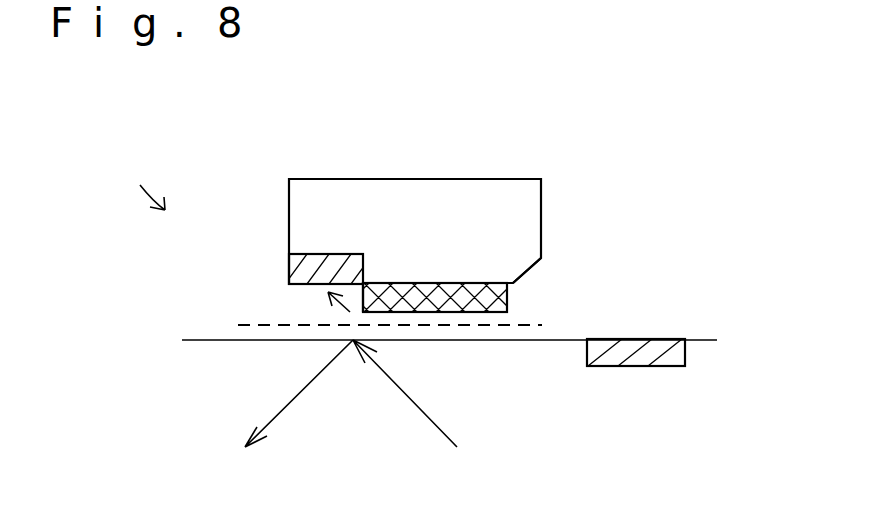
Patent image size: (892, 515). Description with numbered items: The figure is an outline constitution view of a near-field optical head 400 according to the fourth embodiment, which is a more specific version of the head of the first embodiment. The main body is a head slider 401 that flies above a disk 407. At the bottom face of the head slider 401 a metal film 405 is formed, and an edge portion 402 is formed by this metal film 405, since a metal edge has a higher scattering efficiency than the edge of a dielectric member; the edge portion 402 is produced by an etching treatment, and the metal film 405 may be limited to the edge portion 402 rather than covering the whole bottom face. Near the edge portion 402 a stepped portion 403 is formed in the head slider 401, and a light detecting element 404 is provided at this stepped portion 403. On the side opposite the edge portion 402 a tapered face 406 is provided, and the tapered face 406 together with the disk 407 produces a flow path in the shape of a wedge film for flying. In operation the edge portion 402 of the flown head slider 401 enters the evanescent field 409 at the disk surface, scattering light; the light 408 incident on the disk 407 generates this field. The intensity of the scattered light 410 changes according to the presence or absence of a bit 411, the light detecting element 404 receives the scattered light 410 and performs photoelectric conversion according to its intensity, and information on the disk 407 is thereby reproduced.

The near-field optical head 400 is at (173, 177).
The head slider 401 is at (530, 200).
The edge portion 402 is at (385, 284).
The stepped portion 403 is at (300, 265).
The light detecting element 404 is at (290, 252).
The metal film 405 is at (457, 305).
The tapered face 406 is at (518, 280).
The disk 407 is at (702, 357).
The light beam path 408 is at (438, 425).
The evanescent field 409 is at (248, 325).
The scattered light 410 is at (338, 311).
The bit 411 is at (642, 362).